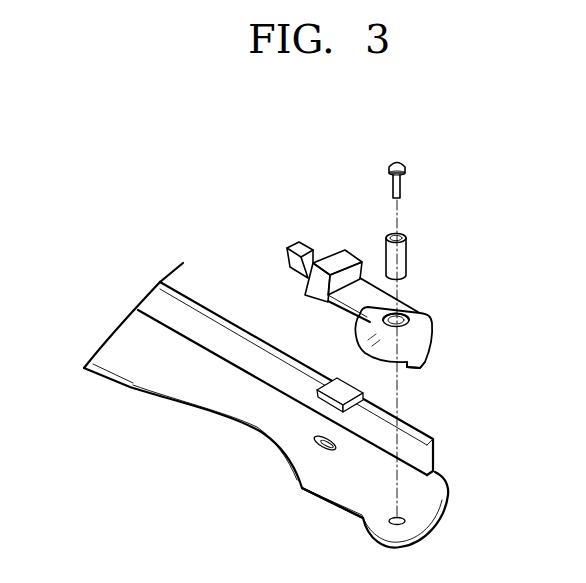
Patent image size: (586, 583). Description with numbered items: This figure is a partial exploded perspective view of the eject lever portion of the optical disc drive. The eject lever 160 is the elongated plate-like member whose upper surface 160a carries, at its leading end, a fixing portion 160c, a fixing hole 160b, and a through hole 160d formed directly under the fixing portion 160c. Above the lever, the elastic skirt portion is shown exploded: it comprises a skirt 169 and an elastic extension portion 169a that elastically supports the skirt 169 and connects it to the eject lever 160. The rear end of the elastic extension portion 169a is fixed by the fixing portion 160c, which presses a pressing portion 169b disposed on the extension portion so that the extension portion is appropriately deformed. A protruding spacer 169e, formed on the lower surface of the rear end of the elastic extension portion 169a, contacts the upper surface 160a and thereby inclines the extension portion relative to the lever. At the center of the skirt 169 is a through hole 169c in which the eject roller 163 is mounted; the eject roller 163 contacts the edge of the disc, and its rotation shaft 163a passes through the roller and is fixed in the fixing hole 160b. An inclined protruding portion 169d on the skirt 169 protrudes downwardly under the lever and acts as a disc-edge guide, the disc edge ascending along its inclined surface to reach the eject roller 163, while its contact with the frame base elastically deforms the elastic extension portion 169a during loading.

The eject lever 160 is at (123, 393).
The upper surface of the eject lever 160a is at (352, 472).
The fixing hole 160b is at (398, 520).
The fixing portion 160c is at (337, 387).
The through hole 160d is at (313, 436).
The eject roller 163 is at (408, 260).
The rotation shaft 163a is at (398, 160).
The skirt 169 is at (365, 298).
The elastic extension portion 169a is at (368, 295).
The pressing portion 169b is at (332, 257).
The through hole 169c is at (402, 308).
The protruding portion 169d is at (426, 364).
The protruding spacer 169e is at (288, 265).